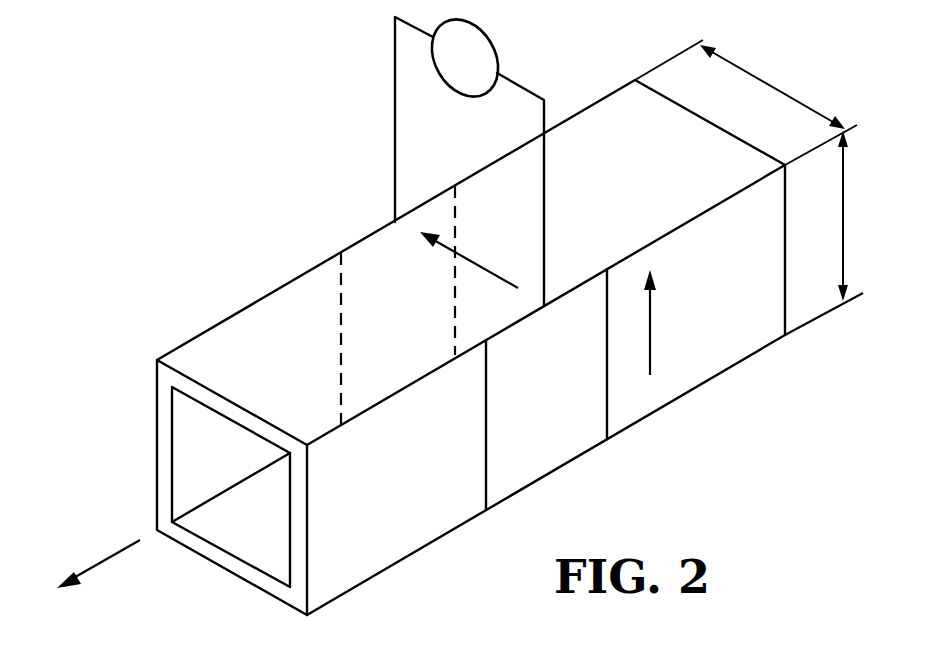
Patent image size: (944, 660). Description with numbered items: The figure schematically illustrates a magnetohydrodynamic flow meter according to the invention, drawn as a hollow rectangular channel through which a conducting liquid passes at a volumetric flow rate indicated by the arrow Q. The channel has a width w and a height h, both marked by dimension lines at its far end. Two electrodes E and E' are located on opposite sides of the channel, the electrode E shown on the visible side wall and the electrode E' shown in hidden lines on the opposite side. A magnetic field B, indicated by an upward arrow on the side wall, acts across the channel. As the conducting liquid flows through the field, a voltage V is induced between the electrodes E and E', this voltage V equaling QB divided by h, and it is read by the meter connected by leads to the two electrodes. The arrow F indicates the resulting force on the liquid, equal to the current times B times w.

The voltage V is at (469, 156).
The channel width w is at (785, 92).
The channel height h is at (843, 227).
The electrode E' is at (348, 305).
The force F is at (473, 260).
The magnetic field B is at (650, 342).
The electrode E is at (550, 391).
The volumetric flow rate Q is at (107, 562).